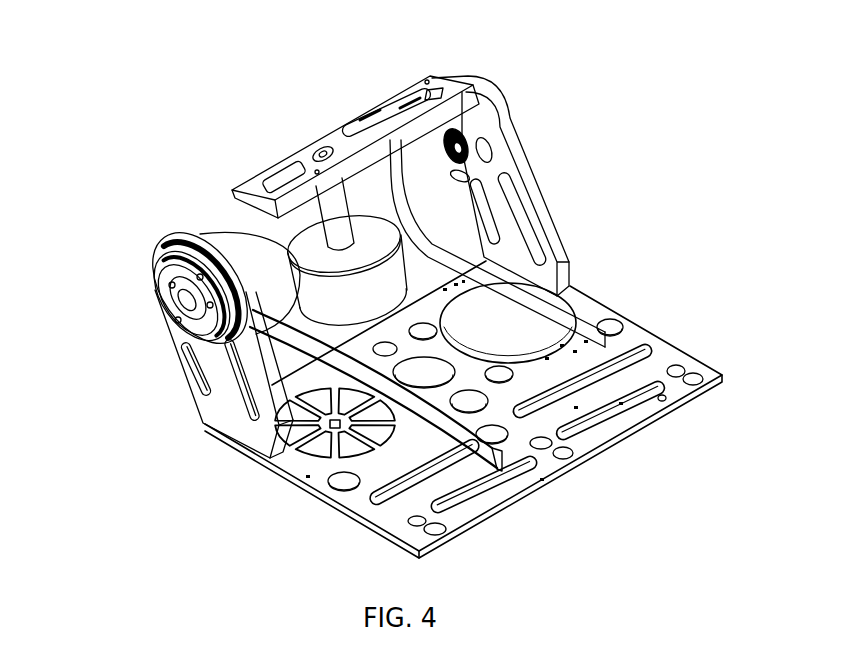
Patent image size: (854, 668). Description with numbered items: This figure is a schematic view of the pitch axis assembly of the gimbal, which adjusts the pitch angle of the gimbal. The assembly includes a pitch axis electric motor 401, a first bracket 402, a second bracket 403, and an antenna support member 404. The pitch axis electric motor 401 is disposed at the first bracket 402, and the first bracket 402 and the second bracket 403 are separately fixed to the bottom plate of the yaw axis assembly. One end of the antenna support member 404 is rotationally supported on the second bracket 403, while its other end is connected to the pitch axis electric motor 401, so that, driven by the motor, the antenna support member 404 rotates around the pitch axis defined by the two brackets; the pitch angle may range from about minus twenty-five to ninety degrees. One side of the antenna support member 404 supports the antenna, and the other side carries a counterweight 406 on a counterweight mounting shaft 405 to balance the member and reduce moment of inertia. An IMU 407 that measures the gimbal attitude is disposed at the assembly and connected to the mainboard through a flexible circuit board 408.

The pitch axis electric motor 401 is at (214, 226).
The first bracket 402 is at (226, 333).
The second bracket 403 is at (556, 238).
The antenna support member 404 is at (347, 115).
The counterweight mounting shaft 405 is at (333, 207).
The counterweight 406 is at (392, 275).
The IMU 407 is at (393, 115).
The flexible circuit board 408 is at (413, 213).